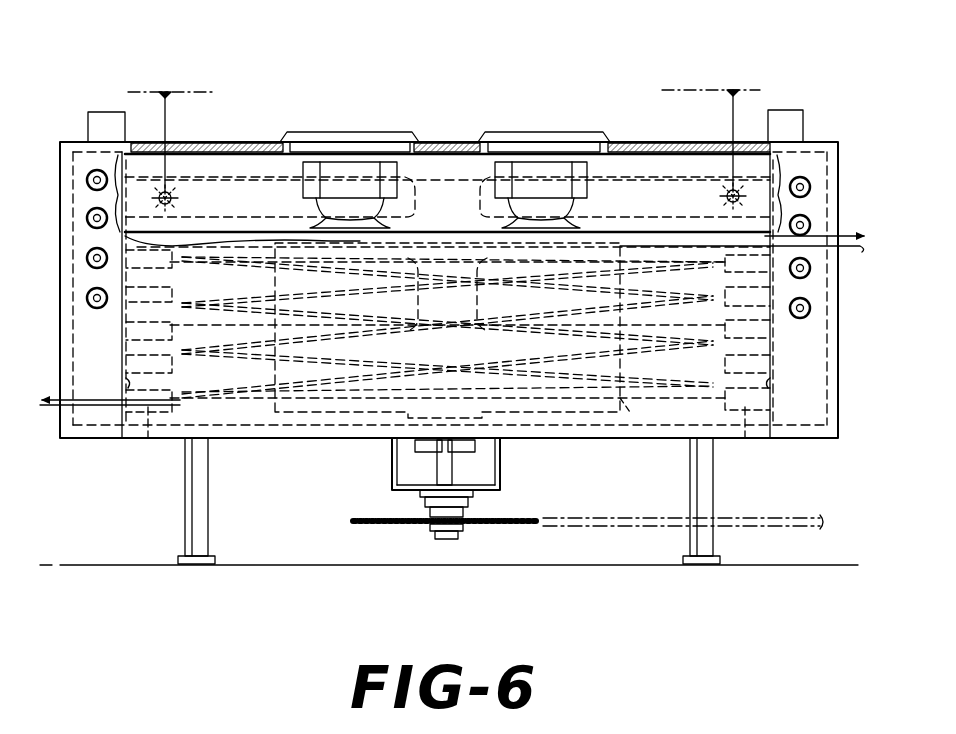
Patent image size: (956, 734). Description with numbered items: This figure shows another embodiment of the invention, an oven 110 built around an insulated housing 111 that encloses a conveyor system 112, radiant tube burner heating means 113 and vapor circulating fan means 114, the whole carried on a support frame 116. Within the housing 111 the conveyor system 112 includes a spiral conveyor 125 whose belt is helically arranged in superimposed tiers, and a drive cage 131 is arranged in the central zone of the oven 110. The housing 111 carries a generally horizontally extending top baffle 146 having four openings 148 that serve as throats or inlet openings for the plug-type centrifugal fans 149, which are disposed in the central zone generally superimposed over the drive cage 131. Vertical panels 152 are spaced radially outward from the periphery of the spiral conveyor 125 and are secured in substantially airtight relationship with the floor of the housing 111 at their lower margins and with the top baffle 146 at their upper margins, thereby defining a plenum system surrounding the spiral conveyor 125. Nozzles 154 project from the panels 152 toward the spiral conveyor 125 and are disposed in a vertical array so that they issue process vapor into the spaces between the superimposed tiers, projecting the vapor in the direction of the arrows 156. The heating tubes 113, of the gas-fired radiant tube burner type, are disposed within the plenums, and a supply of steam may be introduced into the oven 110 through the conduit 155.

The oven 110 is at (533, 86).
The insulated housing 111 is at (203, 141).
The conveyor system 112 is at (703, 216).
The radiant tube burner heating means 113 is at (100, 226).
The vapor circulating fan means 114 is at (366, 128).
The support frame 116 is at (184, 512).
The spiral conveyor 125 is at (372, 398).
The drive cage 131 is at (627, 408).
The top baffle 146 is at (193, 229).
The openings 148 is at (322, 218).
The plug-type centrifugal fans 149 is at (505, 175).
The vertical panels 152 is at (126, 383).
The nozzles 154 is at (130, 300).
The conduit 155 is at (174, 193).
The arrows 156 is at (186, 300).